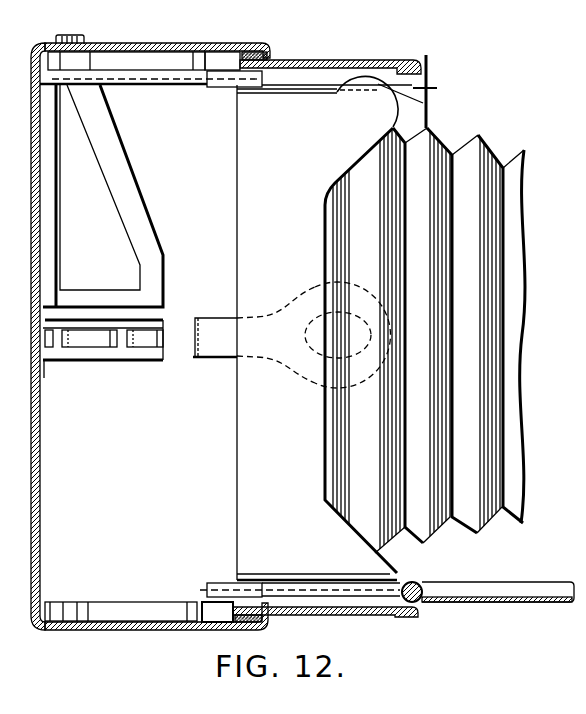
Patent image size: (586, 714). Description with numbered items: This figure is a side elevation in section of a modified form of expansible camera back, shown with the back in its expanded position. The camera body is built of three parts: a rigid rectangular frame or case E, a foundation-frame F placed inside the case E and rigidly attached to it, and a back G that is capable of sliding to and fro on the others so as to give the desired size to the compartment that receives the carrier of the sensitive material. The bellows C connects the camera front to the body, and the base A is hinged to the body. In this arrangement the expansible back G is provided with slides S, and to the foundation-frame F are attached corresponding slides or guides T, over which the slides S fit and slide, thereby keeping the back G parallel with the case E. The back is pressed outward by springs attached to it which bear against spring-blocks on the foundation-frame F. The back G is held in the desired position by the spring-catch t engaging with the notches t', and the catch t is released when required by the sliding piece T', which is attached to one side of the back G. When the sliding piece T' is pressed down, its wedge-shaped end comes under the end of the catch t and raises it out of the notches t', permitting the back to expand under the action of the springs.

The back G is at (139, 332).
The slides S is at (233, 337).
The sliding piece T' is at (103, 196).
The notches t' is at (110, 349).
The spring-catch t is at (315, 221).
The foundation-frame F is at (317, 328).
The bellows C is at (425, 350).
The slides or guides T is at (226, 334).
The base A is at (498, 580).
The rigid frame or case E is at (402, 614).